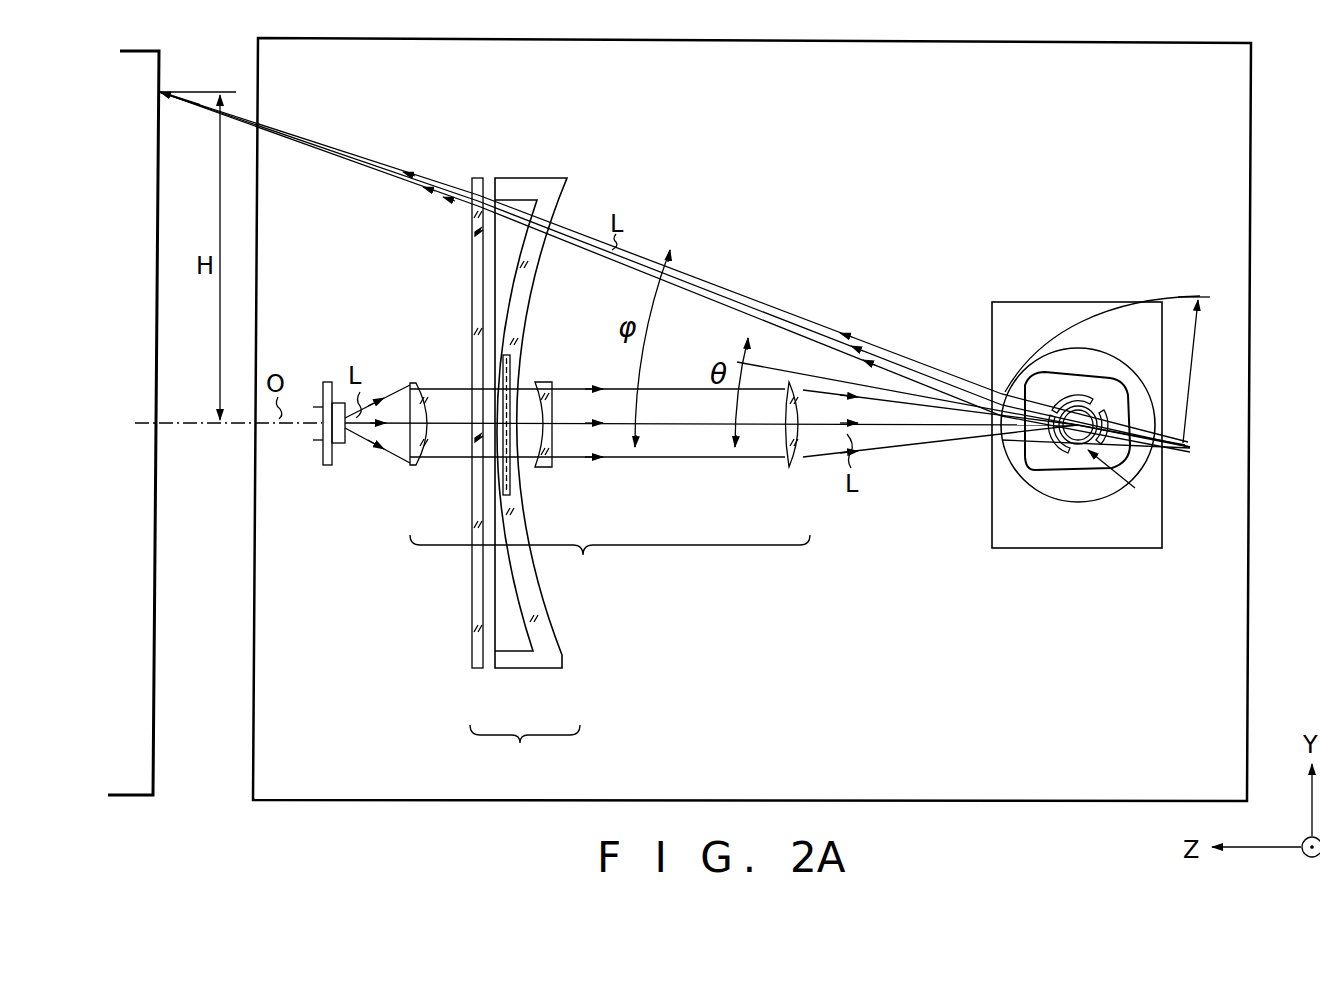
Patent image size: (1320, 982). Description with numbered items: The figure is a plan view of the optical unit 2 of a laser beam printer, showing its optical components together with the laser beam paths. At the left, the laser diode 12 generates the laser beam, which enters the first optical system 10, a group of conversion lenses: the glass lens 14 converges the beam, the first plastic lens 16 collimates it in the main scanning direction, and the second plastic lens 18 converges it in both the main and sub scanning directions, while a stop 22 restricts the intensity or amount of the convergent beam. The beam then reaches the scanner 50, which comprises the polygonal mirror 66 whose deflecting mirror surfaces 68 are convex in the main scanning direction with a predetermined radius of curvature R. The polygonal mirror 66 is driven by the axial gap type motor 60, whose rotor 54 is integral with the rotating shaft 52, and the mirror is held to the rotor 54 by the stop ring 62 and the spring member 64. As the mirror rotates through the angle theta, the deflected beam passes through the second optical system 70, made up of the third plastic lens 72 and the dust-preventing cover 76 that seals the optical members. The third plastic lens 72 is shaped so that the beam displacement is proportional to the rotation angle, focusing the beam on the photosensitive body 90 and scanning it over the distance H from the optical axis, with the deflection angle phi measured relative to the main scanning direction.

The optical unit 2 is at (1254, 95).
The first optical system 10 is at (610, 560).
The laser diode 12 is at (327, 467).
The glass lens 14 is at (412, 467).
The first plastic lens 16 is at (548, 468).
The second plastic lens 18 is at (794, 468).
The stop 22 is at (512, 362).
The scanner 50 is at (1047, 301).
The rotating shaft 52 is at (1098, 402).
The rotor 54 is at (1105, 470).
The axial gap type motor 60 is at (1010, 375).
The stop ring 62 is at (1086, 408).
The spring member 64 is at (1125, 440).
The polygonal mirror 66 is at (1066, 470).
The deflecting mirror surface 68 is at (1022, 455).
The second optical system 70 is at (525, 478).
The third plastic lens 72 is at (556, 670).
The dust-preventing cover 76 is at (477, 670).
The photosensitive body 90 is at (157, 757).